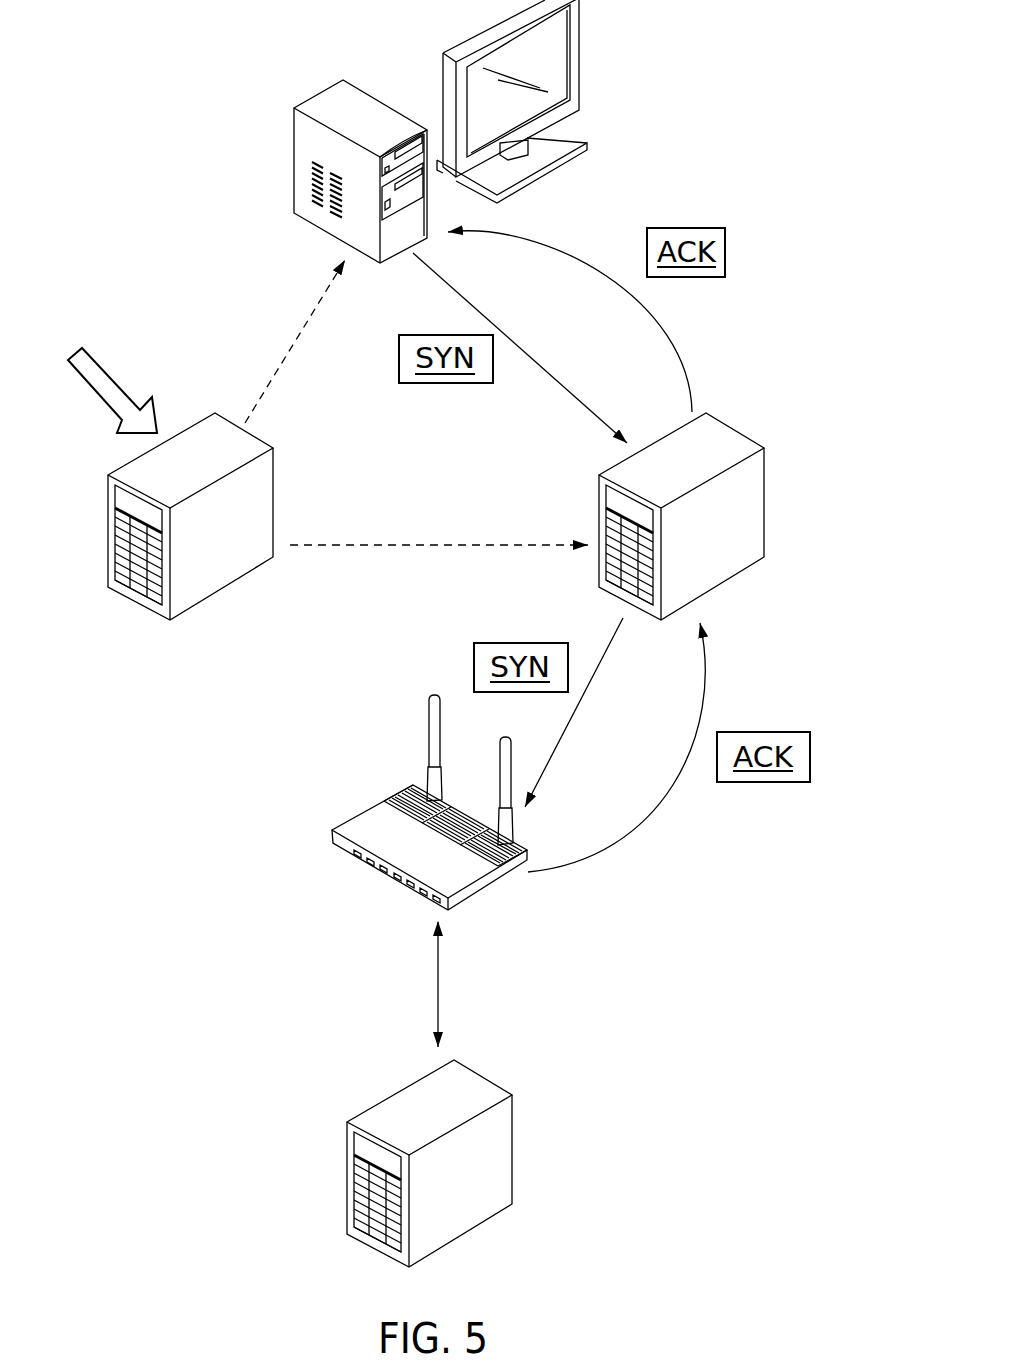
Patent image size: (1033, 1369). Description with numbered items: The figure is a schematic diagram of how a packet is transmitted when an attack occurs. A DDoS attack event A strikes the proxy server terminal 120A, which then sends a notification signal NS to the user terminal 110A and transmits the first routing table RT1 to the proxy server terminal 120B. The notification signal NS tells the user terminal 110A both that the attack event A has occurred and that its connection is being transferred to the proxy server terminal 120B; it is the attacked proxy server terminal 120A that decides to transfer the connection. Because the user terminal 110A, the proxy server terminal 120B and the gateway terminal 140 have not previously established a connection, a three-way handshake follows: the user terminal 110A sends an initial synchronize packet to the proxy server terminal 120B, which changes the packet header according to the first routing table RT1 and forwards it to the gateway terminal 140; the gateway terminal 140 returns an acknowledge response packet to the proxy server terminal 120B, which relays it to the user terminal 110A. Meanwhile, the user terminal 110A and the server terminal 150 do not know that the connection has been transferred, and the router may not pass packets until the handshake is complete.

The user terminal 110A is at (293, 135).
The proxy server terminal 120A is at (273, 505).
The proxy server terminal 120B is at (765, 504).
The gateway terminal 140 is at (350, 818).
The server terminal 150 is at (513, 1150).
The attack event A is at (100, 363).
The notification signal NS is at (300, 335).
The first routing table RT1 is at (488, 545).